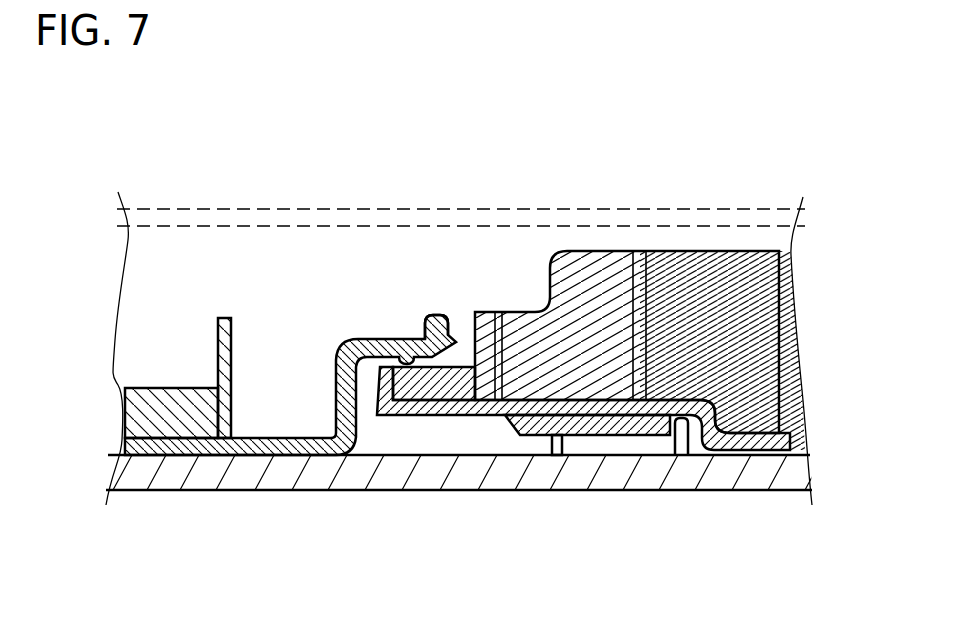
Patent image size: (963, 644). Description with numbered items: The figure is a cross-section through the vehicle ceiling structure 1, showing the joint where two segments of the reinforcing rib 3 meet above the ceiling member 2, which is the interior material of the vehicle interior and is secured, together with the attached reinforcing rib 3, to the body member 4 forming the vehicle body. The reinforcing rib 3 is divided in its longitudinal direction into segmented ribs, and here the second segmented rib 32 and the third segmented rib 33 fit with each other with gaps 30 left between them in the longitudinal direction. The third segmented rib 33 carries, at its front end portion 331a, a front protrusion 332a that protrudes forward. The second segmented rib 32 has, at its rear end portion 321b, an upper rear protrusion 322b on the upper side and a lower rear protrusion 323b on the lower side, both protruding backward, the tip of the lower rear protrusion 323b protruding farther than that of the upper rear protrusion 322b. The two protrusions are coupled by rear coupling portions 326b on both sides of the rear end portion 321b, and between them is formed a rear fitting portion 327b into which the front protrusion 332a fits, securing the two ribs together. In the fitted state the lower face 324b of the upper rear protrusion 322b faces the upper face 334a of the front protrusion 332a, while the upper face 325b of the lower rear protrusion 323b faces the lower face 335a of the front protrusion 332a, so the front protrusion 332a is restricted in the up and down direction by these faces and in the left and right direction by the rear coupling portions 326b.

The vehicle ceiling structure 1 is at (655, 187).
The ceiling member 2 is at (244, 465).
The reinforcing rib 3 is at (170, 405).
The body member 4 is at (185, 212).
The gap 30 is at (463, 347).
The second segmented rib 32 is at (228, 357).
The third segmented rib 33 is at (710, 290).
The rear end portion 321b is at (360, 343).
The upper rear protrusion 322b is at (400, 340).
The lower rear protrusion 323b is at (603, 425).
The lower face 324b is at (390, 405).
The upper face 325b is at (588, 330).
The rear coupling portion 326b is at (520, 433).
The rear fitting portion 327b is at (340, 347).
The front end portion 331a is at (520, 345).
The front protrusion 332a is at (441, 382).
The upper face 334a is at (423, 315).
The lower face 335a is at (502, 417).